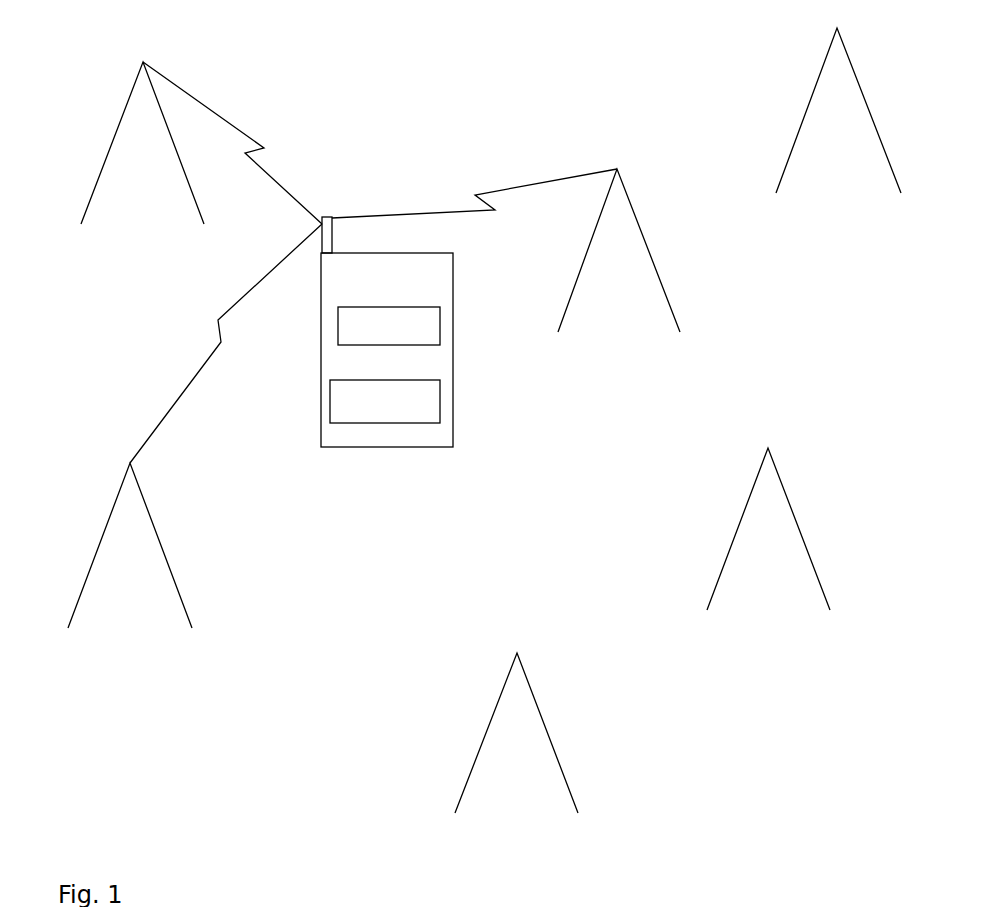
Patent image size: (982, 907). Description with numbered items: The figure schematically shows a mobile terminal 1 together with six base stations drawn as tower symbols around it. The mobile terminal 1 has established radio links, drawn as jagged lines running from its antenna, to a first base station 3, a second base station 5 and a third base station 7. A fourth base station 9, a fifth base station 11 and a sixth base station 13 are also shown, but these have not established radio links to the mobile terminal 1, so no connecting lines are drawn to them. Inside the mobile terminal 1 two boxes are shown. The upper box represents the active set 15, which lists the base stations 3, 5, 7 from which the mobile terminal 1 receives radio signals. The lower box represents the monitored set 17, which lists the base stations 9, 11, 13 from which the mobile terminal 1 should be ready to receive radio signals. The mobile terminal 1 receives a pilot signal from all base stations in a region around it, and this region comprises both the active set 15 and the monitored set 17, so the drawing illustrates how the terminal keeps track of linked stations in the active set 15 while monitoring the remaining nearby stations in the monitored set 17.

The mobile terminal 1 is at (322, 348).
The first base station 3 is at (112, 500).
The second base station 5 is at (630, 183).
The third base station 7 is at (165, 63).
The fourth base station 9 is at (820, 70).
The fifth base station 11 is at (750, 492).
The sixth base station 13 is at (505, 680).
The active set 15 is at (441, 320).
The monitored set 17 is at (441, 401).